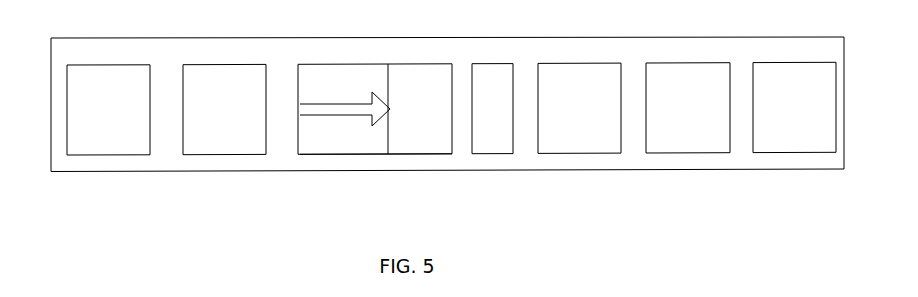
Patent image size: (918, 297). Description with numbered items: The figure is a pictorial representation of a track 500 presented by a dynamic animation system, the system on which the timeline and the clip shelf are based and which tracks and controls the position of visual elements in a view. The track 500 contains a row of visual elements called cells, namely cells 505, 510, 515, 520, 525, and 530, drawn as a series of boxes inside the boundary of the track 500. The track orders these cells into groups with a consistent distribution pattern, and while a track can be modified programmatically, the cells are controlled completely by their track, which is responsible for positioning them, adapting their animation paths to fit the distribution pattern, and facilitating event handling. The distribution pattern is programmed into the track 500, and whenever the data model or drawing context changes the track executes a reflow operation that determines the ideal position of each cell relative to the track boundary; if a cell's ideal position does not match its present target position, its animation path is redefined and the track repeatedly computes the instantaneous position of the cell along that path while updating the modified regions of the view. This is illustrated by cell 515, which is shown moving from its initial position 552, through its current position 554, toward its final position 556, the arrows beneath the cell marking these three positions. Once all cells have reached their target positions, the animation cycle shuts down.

The track 500 is at (230, 224).
The cell 505 is at (108, 65).
The cell 510 is at (224, 65).
The cell 515 is at (428, 64).
The cell 520 is at (578, 63).
The cell 525 is at (688, 63).
The cell 530 is at (795, 62).
The initial position 552 is at (315, 155).
The current position 554 is at (430, 155).
The final position 556 is at (501, 155).